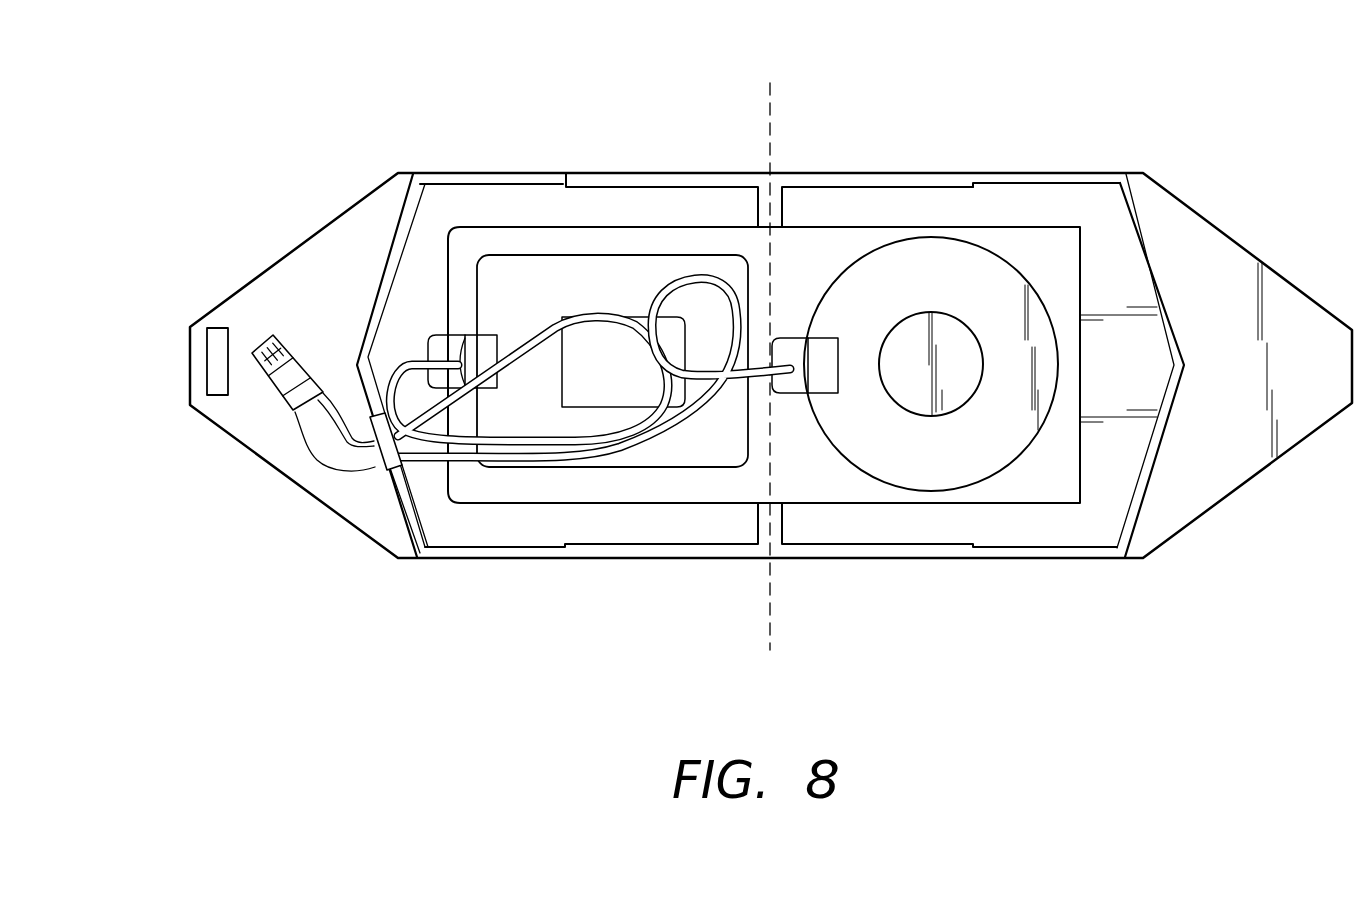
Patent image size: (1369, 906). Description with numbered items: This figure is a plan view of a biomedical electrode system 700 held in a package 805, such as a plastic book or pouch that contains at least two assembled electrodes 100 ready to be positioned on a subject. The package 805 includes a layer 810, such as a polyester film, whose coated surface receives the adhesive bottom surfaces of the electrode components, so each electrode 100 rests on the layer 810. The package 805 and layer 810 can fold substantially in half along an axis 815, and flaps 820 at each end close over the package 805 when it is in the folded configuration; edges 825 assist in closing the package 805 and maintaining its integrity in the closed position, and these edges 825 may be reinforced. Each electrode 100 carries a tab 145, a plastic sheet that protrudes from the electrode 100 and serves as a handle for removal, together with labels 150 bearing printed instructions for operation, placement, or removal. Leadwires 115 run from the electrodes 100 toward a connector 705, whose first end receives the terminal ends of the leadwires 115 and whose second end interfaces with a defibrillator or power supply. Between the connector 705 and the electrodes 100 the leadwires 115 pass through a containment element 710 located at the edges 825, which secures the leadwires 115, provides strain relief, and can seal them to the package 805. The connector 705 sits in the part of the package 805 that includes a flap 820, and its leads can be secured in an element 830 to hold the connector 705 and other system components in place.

The biomedical electrode system 700 is at (1080, 84).
The flap 820 is at (362, 200).
The edge 825 is at (498, 173).
The package 805 is at (720, 172).
The axis 815 is at (771, 117).
The layer 810 is at (980, 227).
The element 830 is at (212, 327).
The electrode 100 is at (683, 472).
The label 150 is at (486, 336).
The tab 145 is at (441, 304).
The leadwire 115 is at (673, 281).
The connector 705 is at (275, 333).
The containment element 710 is at (380, 466).